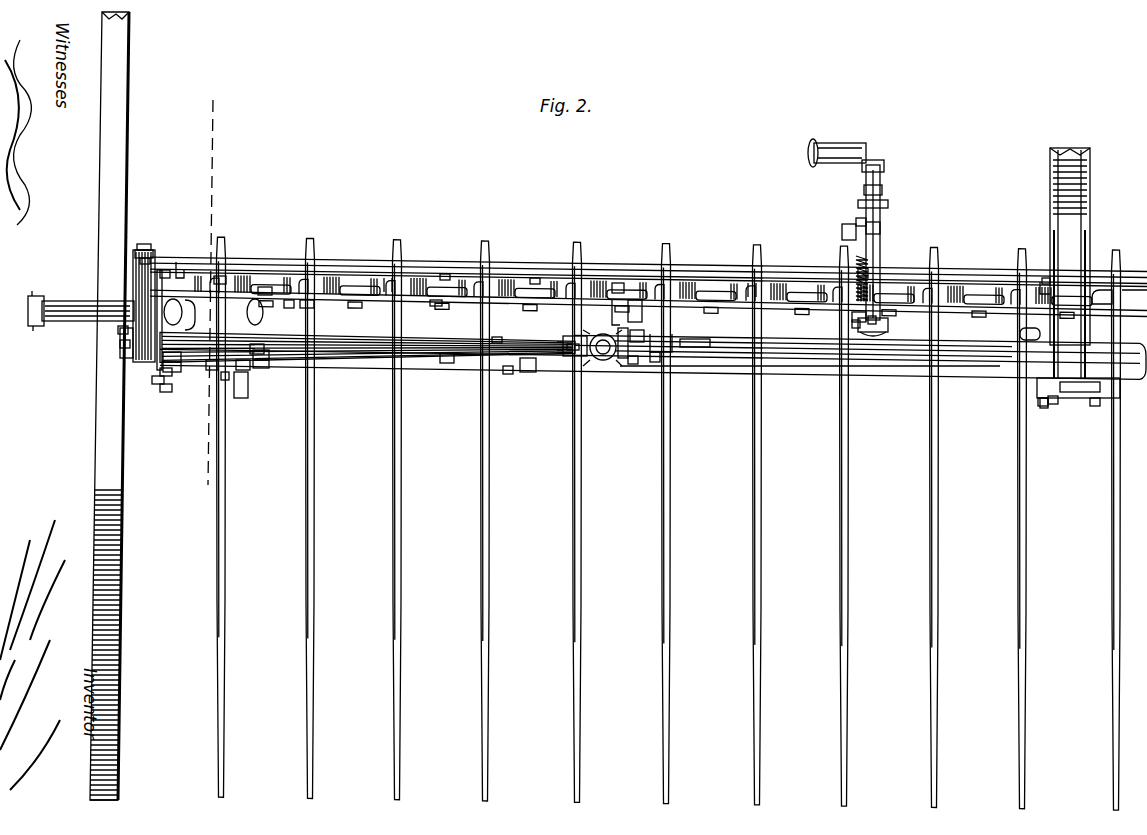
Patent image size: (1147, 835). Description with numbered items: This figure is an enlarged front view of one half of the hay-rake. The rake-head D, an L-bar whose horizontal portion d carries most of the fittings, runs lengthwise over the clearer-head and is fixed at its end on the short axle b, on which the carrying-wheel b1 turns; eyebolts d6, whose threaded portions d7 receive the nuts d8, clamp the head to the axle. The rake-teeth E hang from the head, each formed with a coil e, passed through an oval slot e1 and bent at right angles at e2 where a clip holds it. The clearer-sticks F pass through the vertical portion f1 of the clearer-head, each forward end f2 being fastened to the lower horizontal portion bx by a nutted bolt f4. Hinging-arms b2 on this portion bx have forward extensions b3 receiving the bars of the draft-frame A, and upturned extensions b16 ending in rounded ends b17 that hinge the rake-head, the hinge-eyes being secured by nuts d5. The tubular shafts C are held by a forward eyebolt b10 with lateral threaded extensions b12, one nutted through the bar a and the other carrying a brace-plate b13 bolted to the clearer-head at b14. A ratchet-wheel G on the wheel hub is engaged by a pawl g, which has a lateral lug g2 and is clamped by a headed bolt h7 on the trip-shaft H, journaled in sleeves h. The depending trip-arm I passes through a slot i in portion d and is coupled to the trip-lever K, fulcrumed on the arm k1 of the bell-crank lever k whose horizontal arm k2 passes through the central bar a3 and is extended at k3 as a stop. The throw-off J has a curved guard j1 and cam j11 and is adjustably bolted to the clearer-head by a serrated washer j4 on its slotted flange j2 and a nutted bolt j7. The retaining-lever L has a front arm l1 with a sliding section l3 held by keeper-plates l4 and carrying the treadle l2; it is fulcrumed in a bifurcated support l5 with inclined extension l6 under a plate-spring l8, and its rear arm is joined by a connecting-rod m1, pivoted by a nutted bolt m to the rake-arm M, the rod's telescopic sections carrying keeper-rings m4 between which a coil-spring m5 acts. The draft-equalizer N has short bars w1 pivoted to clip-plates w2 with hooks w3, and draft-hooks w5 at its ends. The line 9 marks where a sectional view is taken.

The section line 9 is at (206, 293).
The carrying-wheels b1 is at (97, 437).
The short axles b is at (40, 322).
The ratchet-wheels G is at (127, 313).
The headed bolt h7 is at (150, 247).
The pawls g is at (145, 261).
The lateral lug g2 is at (165, 274).
The sleeves h is at (180, 262).
The nuts d8 is at (221, 277).
The threaded portions d7 is at (265, 289).
The eyebolts d6 is at (288, 300).
The trip-shaft H is at (433, 268).
The coil e is at (643, 276).
The oblong slots e1 is at (387, 265).
The right-angled tooth ends e2 is at (447, 273).
The rake-teeth E is at (669, 523).
The rake-head D is at (335, 278).
The main frame bar A is at (793, 375).
The draft-equalizer N is at (713, 362).
The draft-frame bar a is at (742, 355).
The shafts C is at (598, 360).
The lateral threaded extensions b12 is at (570, 342).
The forward eyebolt b10 is at (567, 350).
The brace-plate b13 is at (447, 362).
The forward end of clearer-stick f2 is at (507, 370).
The clearer-sticks F is at (528, 372).
The vertical portion of clearer-head f1 is at (497, 338).
The horizontal portion of rake-head d is at (440, 301).
The nuts d5 is at (618, 283).
The rounded angular ends b17 is at (622, 327).
The upturned extensions b16 is at (627, 323).
The hinging-arms b2 is at (635, 338).
The forward rectangular extension b3 is at (663, 343).
The draft-hooks w5 is at (703, 338).
The short hooks w3 is at (630, 358).
The clip-plates w2 is at (637, 364).
The short bars w1 is at (657, 352).
The pawl stops or throw-offs J is at (127, 357).
The curved guard j1 is at (127, 347).
The throw-off cam j11 is at (122, 332).
The serrated washer j4 is at (168, 373).
The slotted flange j2 is at (157, 383).
The nutted bolt j7 is at (163, 393).
The lower horizontal portion of clearer-head bx is at (213, 368).
The brace-plate bolting point b14 is at (243, 368).
The nutted bolt f4 is at (260, 354).
The retaining-lever L is at (865, 202).
The treadle l2 is at (837, 141).
The keeper-plates l4 is at (882, 168).
The front arm l1 is at (882, 198).
The sliding section l3 is at (863, 208).
The nutted bolt m is at (843, 229).
The rake-arm M is at (858, 221).
The connecting-rod m1 is at (880, 228).
The coil-spring m5 is at (864, 273).
The plate-spring l8 is at (857, 320).
The inclined extension l6 is at (883, 330).
The keeper-ring m4 is at (860, 323).
The bifurcated support l5 is at (877, 317).
The trip-lever K is at (1033, 343).
The bell-crank lever k is at (1020, 334).
The stop extension k3 is at (1040, 398).
The central bar of draft-frame a3 is at (1050, 400).
The arm of bell-crank lever k1 is at (1043, 408).
The horizontal arm k2 is at (1092, 404).
The trip-arm I is at (1045, 293).
The slot i is at (1048, 280).